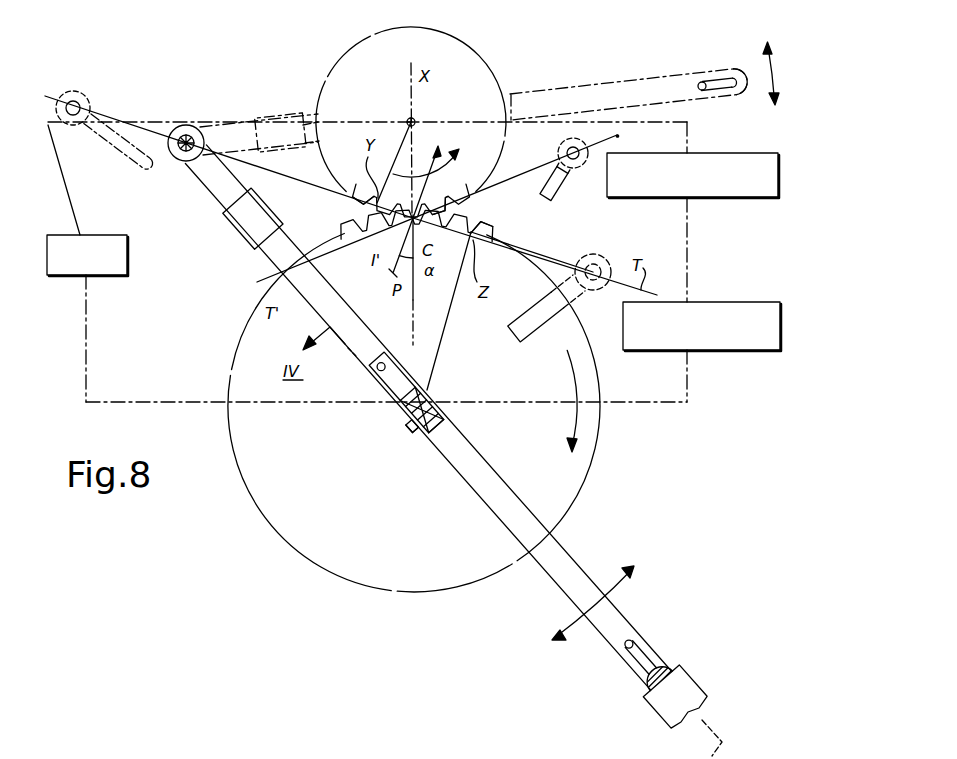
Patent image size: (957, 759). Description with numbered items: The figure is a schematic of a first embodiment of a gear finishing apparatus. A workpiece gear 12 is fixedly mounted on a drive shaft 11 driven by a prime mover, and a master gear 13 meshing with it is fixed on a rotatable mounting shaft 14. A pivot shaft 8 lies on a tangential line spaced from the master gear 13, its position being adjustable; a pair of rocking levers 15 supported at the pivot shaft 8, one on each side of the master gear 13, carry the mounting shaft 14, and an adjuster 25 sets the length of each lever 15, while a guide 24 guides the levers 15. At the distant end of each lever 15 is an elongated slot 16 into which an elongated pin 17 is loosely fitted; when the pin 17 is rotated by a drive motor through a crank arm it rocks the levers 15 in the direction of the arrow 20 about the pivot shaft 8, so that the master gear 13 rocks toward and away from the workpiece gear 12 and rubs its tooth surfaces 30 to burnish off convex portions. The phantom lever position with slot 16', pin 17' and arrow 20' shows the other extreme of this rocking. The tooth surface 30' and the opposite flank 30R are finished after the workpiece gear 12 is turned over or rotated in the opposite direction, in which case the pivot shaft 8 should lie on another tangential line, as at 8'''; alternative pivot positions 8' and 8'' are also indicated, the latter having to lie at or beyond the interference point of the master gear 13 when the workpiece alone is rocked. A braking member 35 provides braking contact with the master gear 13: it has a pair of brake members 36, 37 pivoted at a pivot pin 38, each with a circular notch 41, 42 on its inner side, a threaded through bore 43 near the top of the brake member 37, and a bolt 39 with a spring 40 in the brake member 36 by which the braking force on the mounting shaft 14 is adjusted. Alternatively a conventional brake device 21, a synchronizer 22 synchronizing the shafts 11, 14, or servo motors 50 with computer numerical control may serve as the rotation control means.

The pivot shaft 8 is at (186, 125).
The pivot shaft position 8' is at (104, 118).
The pivot shaft position 8'' is at (559, 288).
The pivot shaft position 8''' is at (556, 167).
The drive shaft 11 is at (433, 107).
The workpiece gear 12 is at (490, 87).
The master gear 13 is at (598, 383).
The mounting shaft 14 is at (431, 392).
The rocking lever 15 is at (210, 183).
The elongated slot 16 is at (666, 653).
The elongated slot 16' is at (732, 62).
The elongated pin 17 is at (645, 635).
The elongated pin 17' is at (704, 60).
The arrow 20 is at (596, 596).
The arrow 20' is at (777, 60).
The brake device 21 is at (119, 233).
The synchronizer 22 is at (660, 200).
The guide 24 is at (690, 677).
The adjuster 25 is at (227, 270).
The tooth surface 30 is at (473, 201).
The tooth surface 30' is at (504, 231).
The other tooth surface 30R is at (367, 203).
The braking member 35 is at (396, 403).
The brake member 36 is at (384, 396).
The brake member 37 is at (418, 383).
The pivot pin 38 is at (385, 362).
The bolt 39 is at (411, 441).
The spring 40 is at (418, 445).
The circular notch 41 is at (402, 424).
The circular notch 42 is at (441, 400).
The through bore 43 is at (446, 421).
The servo motors 50 is at (737, 302).